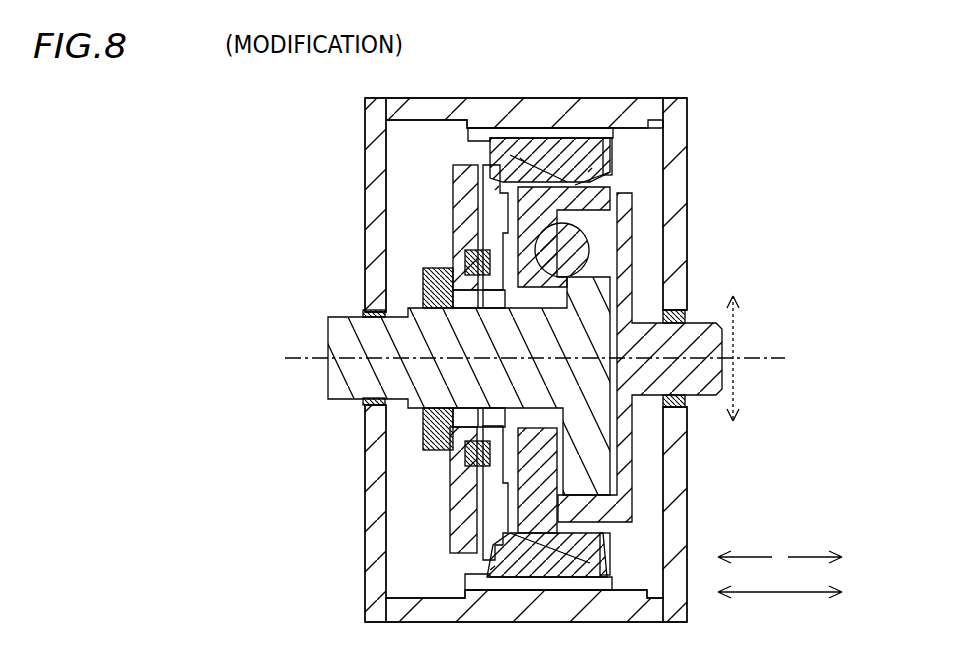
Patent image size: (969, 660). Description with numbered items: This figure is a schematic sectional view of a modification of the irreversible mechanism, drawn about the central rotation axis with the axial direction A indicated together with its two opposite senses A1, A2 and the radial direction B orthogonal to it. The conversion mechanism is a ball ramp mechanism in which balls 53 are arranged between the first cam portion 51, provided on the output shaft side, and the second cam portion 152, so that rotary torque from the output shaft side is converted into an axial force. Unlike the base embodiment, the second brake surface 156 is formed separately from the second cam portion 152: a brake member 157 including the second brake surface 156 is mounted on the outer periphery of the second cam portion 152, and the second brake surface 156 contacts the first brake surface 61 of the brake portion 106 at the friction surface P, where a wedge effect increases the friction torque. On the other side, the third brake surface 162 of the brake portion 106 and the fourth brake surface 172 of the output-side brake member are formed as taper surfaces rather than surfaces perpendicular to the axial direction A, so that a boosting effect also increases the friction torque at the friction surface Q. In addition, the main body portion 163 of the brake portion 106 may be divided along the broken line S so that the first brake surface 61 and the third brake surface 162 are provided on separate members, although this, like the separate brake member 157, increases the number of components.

The first brake surface 61 is at (565, 128).
The second brake surface 156 is at (672, 122).
The brake member 157 is at (612, 166).
The second cam portion 152 is at (613, 181).
The first cam portion 51 is at (632, 206).
The balls 53 is at (600, 232).
The fourth brake surface 172 is at (453, 172).
The third brake surface 162 is at (480, 178).
The brake portion 106 is at (497, 142).
The main body portion 163 is at (550, 165).
The broken line S is at (520, 158).
The friction surface P is at (590, 170).
The friction surface Q is at (497, 187).
The radial direction B is at (741, 358).
The axial direction A is at (780, 603).
The first axial direction A1 is at (745, 566).
The second axial direction A2 is at (815, 566).